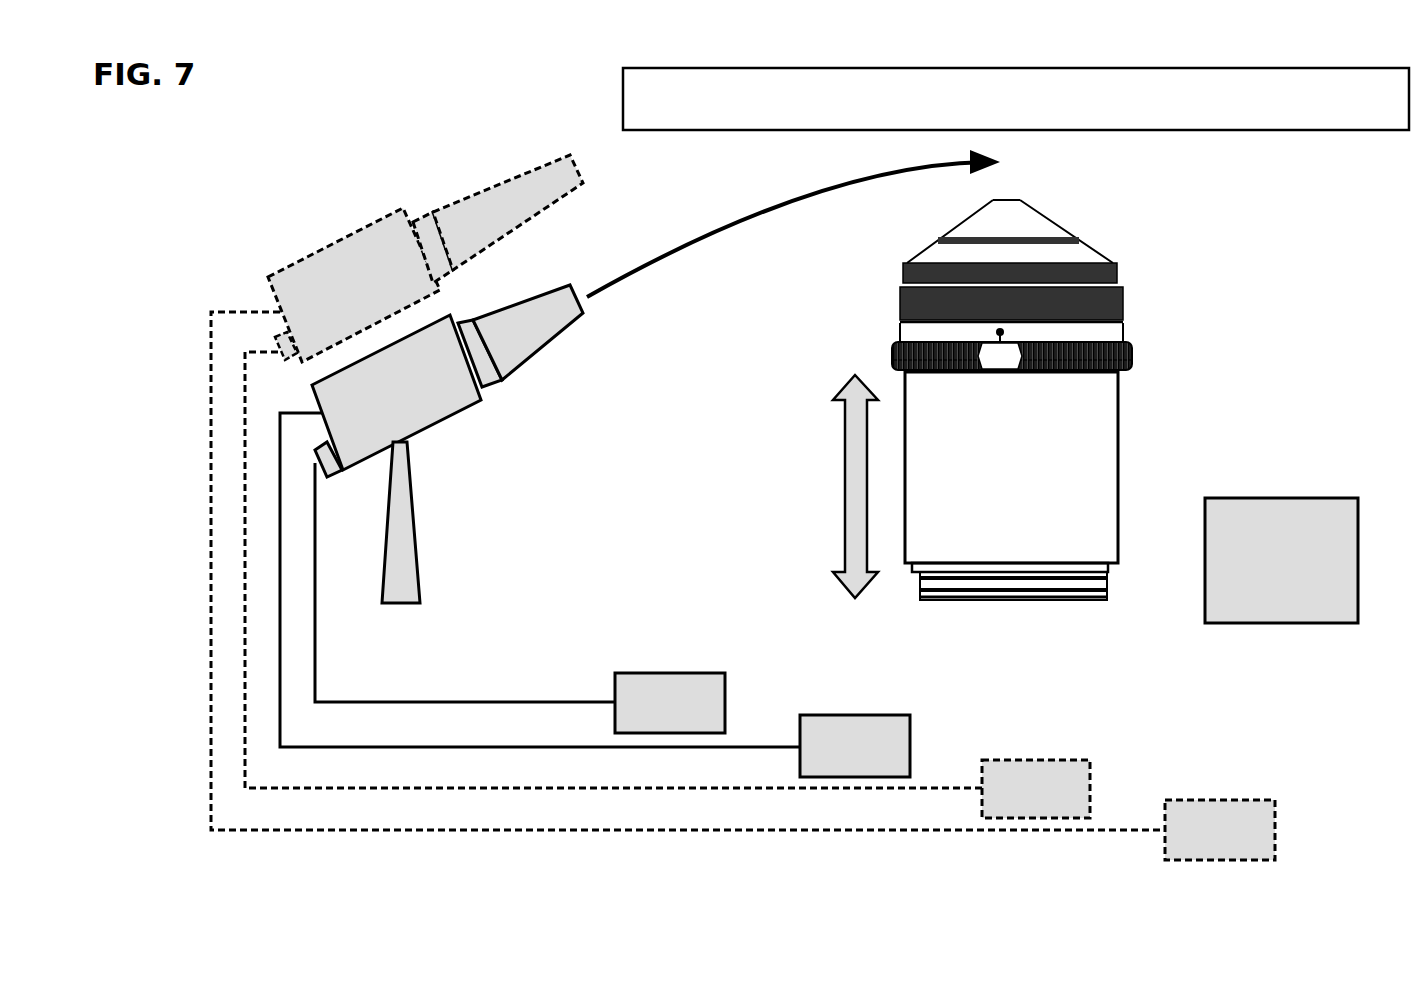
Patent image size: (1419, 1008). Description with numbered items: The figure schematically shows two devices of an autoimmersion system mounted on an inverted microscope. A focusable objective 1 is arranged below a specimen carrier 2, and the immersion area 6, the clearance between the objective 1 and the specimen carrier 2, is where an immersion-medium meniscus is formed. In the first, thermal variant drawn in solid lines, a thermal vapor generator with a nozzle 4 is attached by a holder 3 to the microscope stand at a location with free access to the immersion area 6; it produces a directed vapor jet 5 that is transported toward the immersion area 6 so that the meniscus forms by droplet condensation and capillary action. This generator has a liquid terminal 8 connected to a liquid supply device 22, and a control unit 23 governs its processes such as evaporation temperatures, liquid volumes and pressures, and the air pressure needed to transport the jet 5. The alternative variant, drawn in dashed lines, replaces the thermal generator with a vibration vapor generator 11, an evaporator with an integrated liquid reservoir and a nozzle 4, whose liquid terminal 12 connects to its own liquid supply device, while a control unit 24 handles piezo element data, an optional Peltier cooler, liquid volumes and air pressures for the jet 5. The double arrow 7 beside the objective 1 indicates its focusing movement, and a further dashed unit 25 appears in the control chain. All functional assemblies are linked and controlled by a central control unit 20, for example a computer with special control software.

The objective 1 is at (1080, 478).
The specimen carrier 2 is at (1255, 117).
The holder 3 is at (403, 500).
The nozzle 4 is at (403, 393).
The directed vapor jet 5 is at (742, 217).
The immersion area 6 is at (1007, 132).
The axial movement direction 7 is at (855, 542).
The liquid terminal 8 is at (337, 470).
The vibration vapor generator 11 is at (493, 212).
The liquid terminal 12 is at (280, 337).
The central control unit 20 is at (1310, 585).
The liquid supply device 22 is at (658, 702).
The control unit 23 is at (860, 738).
The control unit 24 is at (1043, 775).
The drive unit 25 is at (1225, 820).